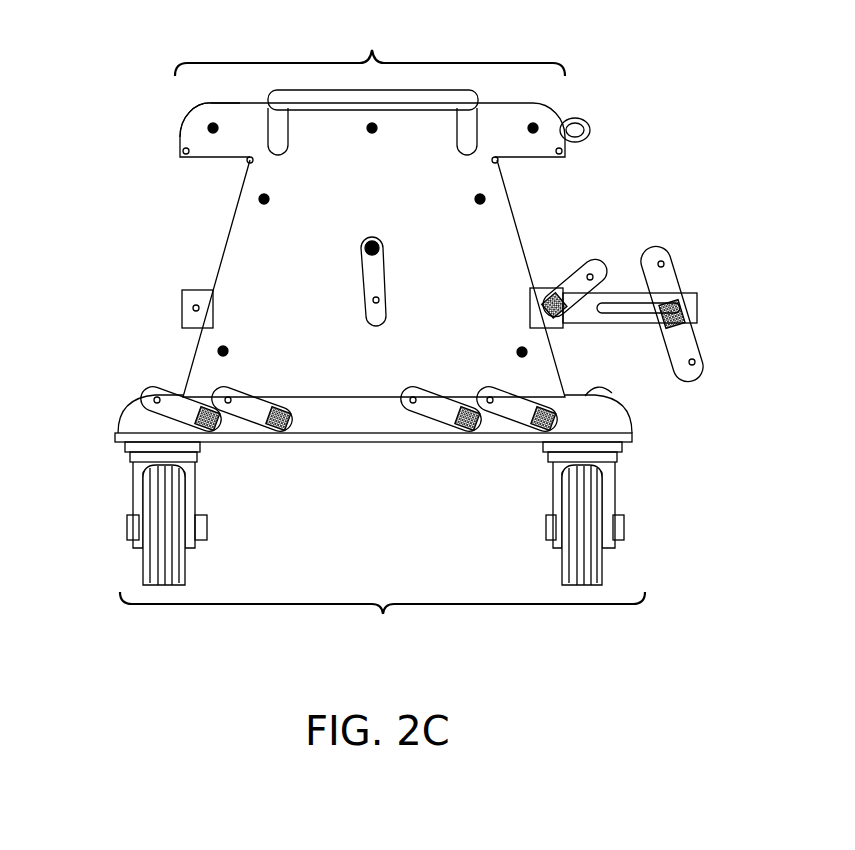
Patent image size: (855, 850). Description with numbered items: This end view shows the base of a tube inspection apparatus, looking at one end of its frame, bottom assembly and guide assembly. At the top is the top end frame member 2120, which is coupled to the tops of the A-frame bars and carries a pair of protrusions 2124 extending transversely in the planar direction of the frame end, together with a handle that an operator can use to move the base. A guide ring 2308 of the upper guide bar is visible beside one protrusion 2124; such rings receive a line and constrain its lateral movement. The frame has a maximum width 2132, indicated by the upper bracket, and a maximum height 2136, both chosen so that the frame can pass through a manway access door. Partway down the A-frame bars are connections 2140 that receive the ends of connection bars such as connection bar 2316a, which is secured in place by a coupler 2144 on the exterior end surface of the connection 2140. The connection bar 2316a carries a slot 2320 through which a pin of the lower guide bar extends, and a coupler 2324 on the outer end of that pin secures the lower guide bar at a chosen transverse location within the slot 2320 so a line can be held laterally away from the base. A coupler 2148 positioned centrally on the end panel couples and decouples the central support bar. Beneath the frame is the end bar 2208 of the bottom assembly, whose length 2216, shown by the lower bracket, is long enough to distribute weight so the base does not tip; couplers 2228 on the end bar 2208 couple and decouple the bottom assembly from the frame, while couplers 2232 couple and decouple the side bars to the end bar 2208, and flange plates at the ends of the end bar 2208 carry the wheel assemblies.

The maximum width 2132 is at (370, 44).
The protrusion 2124 is at (190, 115).
The top end frame member 2120 is at (182, 132).
The guide ring 2308 is at (590, 130).
The coupler 2144 is at (590, 265).
The connection bar 2316a is at (625, 292).
The connection 2140 is at (182, 305).
The coupler 2148 is at (365, 298).
The maximum height 2136 is at (240, 328).
The slot 2320 is at (638, 312).
The coupler 2324 is at (700, 350).
The end bar 2208 is at (118, 430).
The coupler 2228 is at (200, 425).
The coupler 2232 is at (272, 428).
The length 2216 is at (382, 626).